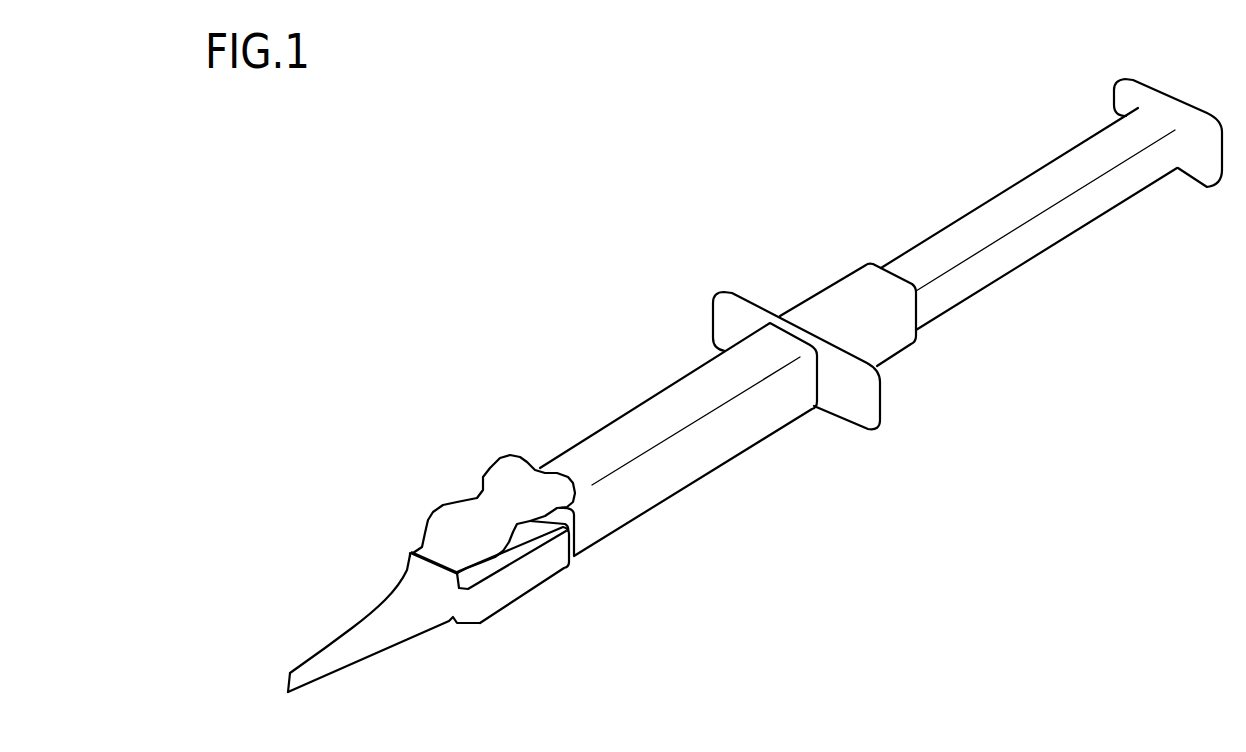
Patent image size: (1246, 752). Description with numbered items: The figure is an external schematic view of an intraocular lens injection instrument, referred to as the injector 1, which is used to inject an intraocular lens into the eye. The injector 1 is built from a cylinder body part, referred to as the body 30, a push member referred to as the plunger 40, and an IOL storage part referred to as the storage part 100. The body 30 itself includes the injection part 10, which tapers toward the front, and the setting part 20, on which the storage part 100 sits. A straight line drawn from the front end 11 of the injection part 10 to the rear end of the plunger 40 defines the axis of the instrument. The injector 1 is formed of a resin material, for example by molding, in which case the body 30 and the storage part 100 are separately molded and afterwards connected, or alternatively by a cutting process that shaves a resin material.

The injector 1 is at (938, 171).
The injection part 10 is at (352, 649).
The front end 11 is at (286, 684).
The setting part 20 is at (523, 577).
The body 30 is at (735, 433).
The plunger 40 is at (1057, 223).
The IOL storage part 100 is at (488, 513).